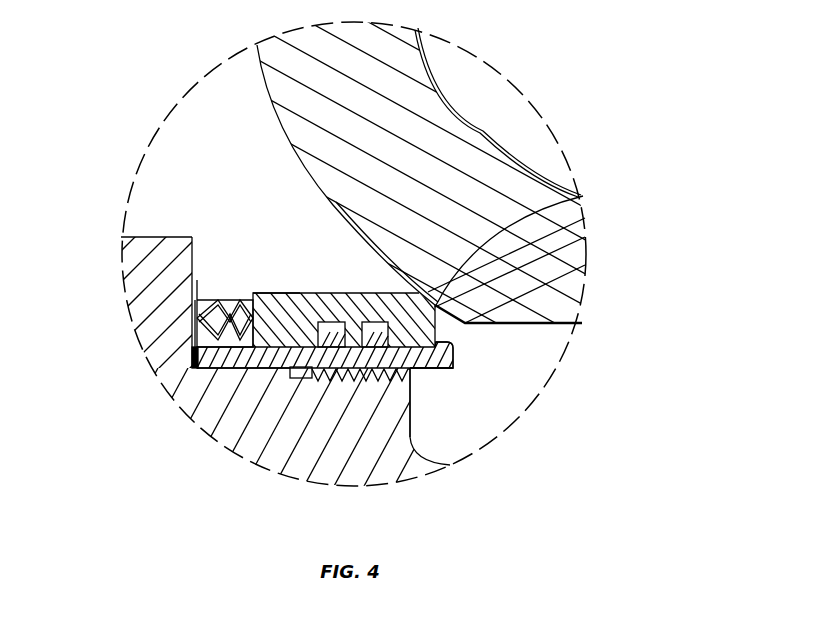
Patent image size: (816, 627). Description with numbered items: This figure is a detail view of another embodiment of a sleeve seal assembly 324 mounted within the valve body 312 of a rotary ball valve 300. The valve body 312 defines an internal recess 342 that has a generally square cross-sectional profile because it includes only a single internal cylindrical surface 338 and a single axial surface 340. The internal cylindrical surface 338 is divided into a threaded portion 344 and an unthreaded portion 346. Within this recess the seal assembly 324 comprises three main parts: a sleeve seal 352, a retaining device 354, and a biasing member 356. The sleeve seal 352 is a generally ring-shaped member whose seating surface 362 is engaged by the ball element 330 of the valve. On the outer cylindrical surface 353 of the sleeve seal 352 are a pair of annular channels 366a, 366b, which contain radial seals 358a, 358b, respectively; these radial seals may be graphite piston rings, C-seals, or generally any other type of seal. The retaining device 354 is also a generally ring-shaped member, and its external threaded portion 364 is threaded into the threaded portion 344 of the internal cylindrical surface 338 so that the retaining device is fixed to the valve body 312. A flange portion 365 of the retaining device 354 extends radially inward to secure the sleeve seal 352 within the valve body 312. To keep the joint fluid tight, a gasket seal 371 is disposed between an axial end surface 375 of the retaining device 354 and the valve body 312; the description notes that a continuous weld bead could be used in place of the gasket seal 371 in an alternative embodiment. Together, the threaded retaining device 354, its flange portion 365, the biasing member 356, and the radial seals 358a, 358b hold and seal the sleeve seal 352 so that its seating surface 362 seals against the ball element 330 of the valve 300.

The valve 300 is at (200, 77).
The valve body 312 is at (260, 442).
The seal assembly 324 is at (270, 268).
The ball element 330 is at (467, 160).
The internal cylindrical surface 338 is at (413, 370).
The threaded portion 344 is at (413, 370).
The axial surface 340 is at (193, 238).
The internal recess 342 is at (207, 262).
The unthreaded portion 346 is at (228, 367).
The sleeve seal 352 is at (349, 293).
The outer cylindrical surface 353 is at (453, 365).
The retaining device 354 is at (298, 368).
The biasing member 356 is at (232, 300).
The radial seal 358a is at (585, 265).
The radial seal 358b is at (297, 290).
The seating surface 362 is at (583, 196).
The external threaded portion 364 is at (356, 381).
The flange portion 365 is at (450, 340).
The annular channel 366a is at (585, 220).
The annular channel 366b is at (321, 322).
The gasket seal 371 is at (195, 348).
The axial end surface 375 is at (192, 371).